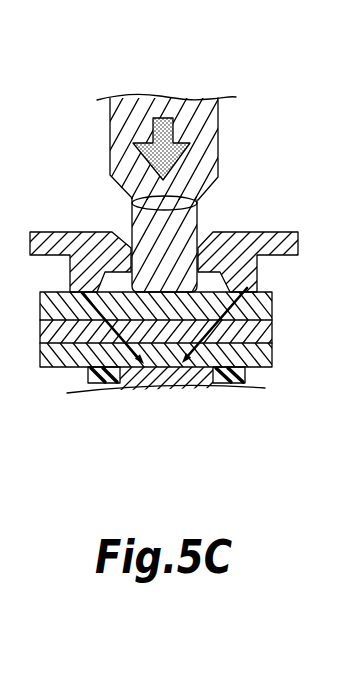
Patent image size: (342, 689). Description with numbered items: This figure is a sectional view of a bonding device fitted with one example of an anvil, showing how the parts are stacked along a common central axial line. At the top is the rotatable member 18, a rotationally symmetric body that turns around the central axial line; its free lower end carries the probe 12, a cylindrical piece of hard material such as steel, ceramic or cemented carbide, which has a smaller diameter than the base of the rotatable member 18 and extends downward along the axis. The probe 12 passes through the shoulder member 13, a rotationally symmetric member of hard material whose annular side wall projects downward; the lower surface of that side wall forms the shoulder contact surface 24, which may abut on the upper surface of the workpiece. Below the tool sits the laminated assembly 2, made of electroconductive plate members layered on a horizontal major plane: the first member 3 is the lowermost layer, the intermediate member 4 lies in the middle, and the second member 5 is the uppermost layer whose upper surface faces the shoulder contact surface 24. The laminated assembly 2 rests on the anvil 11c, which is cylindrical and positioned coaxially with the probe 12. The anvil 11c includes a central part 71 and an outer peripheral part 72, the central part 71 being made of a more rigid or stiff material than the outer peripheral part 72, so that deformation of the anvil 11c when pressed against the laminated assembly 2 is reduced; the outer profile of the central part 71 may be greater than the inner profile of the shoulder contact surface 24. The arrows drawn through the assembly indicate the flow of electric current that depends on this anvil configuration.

The rotatable member 18 is at (199, 96).
The probe 12 is at (196, 229).
The shoulder member 13 is at (276, 229).
The laminated assembly 2 is at (171, 333).
The second member 5 is at (273, 308).
The intermediate member 4 is at (273, 335).
The first member 3 is at (154, 358).
The shoulder contact surface 24 is at (70, 298).
The anvil 11c is at (166, 433).
The central part 71 is at (186, 389).
The outer peripheral part 72 is at (233, 410).